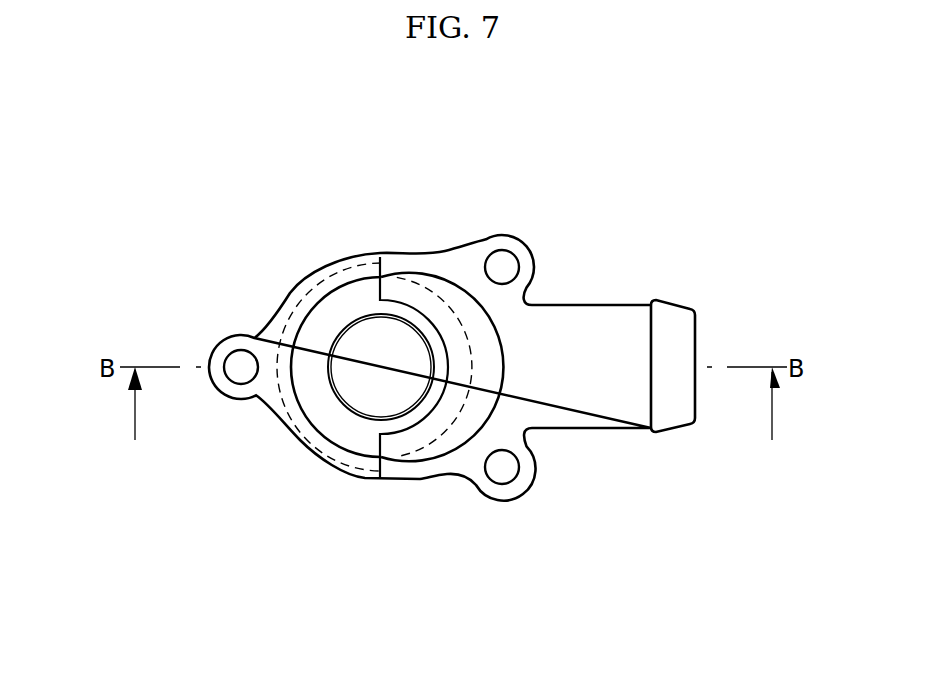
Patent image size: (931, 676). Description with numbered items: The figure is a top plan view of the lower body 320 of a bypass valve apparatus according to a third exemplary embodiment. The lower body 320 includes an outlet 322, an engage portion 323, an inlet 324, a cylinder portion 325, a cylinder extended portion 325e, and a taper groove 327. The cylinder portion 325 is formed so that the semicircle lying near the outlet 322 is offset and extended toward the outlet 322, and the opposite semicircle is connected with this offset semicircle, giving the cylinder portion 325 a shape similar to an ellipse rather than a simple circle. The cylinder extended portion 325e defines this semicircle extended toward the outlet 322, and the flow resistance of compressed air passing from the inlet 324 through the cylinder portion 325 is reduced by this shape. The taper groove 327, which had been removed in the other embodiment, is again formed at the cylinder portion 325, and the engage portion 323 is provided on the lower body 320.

The lower body 320 is at (524, 213).
The outlet 322 is at (588, 320).
The engage portion 323 is at (480, 477).
The inlet 324 is at (387, 342).
The cylinder portion 325 is at (293, 338).
The cylinder extended portion 325e is at (460, 291).
The taper groove 327 is at (280, 362).